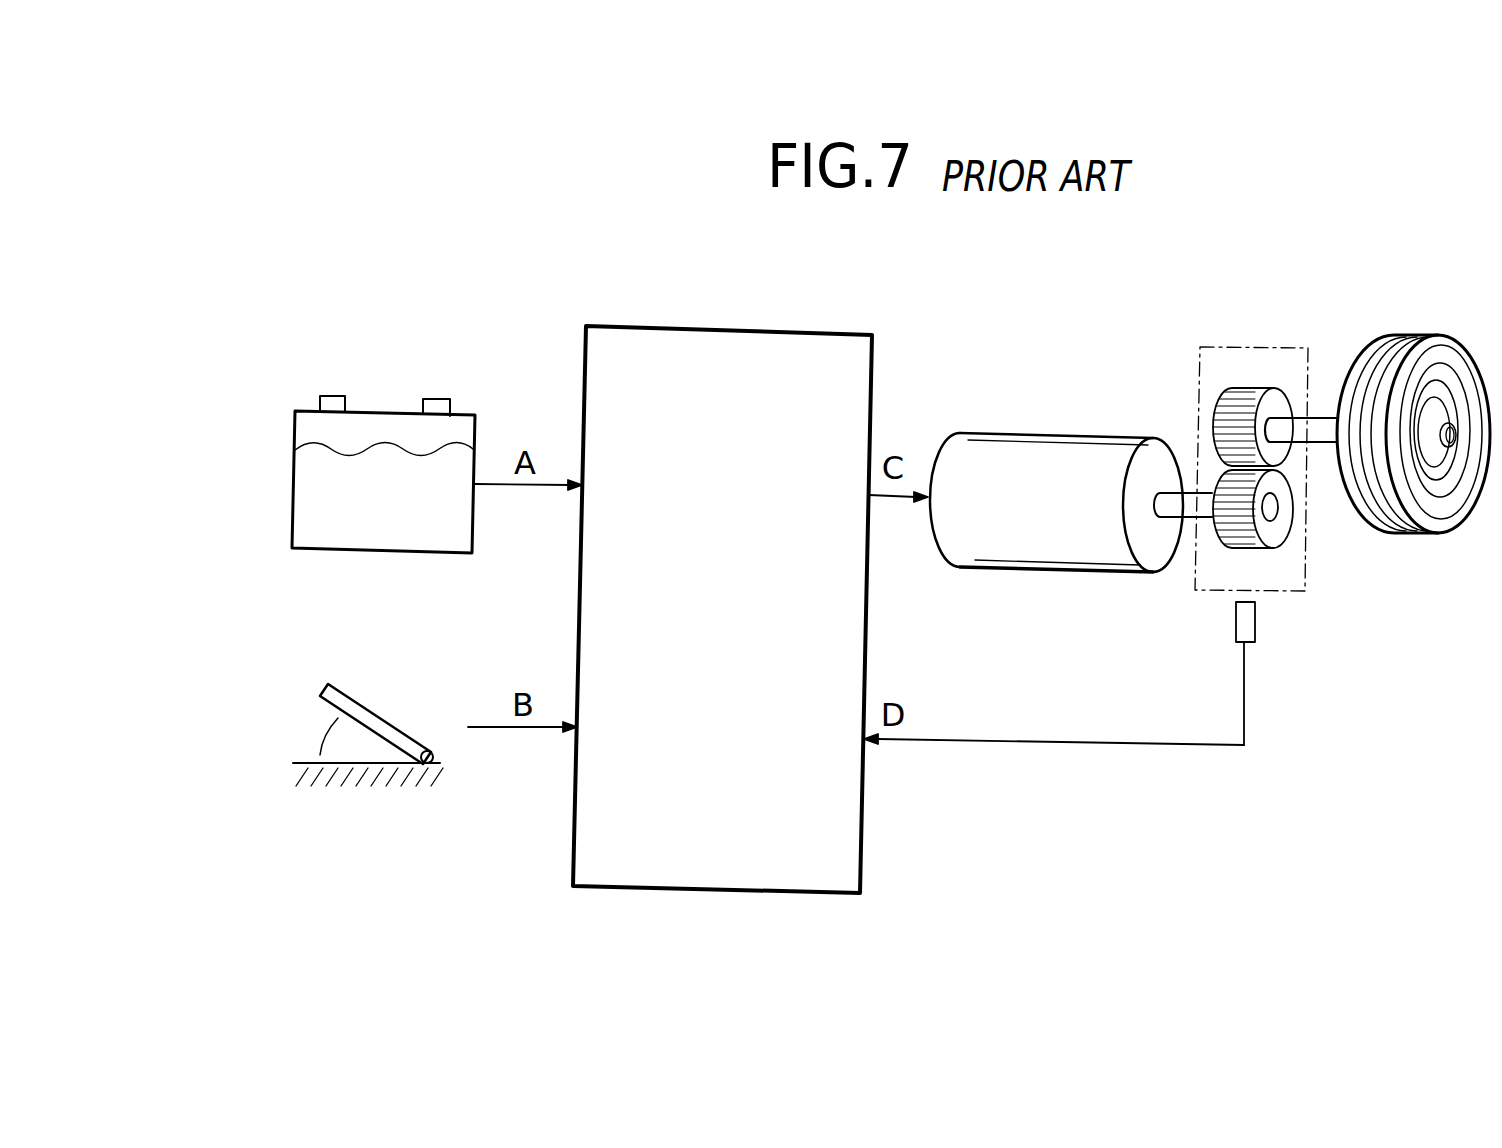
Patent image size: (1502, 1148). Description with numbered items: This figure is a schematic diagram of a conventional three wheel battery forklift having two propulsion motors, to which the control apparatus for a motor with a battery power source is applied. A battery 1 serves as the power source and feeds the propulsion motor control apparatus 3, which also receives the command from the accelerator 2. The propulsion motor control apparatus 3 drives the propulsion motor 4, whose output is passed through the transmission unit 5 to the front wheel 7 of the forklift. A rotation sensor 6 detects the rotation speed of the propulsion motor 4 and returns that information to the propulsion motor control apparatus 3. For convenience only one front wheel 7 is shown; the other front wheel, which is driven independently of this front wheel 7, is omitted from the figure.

The battery 1 is at (293, 523).
The accelerator 2 is at (383, 720).
The propulsion motor control apparatus 3 is at (873, 397).
The propulsion motor 4 is at (1003, 430).
The transmission unit 5 is at (1302, 347).
The rotation sensor 6 is at (1236, 618).
The front wheel 7 is at (1400, 535).